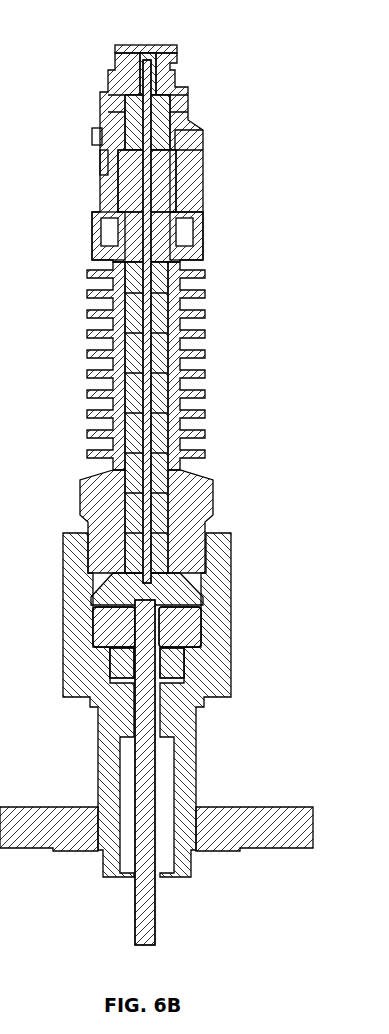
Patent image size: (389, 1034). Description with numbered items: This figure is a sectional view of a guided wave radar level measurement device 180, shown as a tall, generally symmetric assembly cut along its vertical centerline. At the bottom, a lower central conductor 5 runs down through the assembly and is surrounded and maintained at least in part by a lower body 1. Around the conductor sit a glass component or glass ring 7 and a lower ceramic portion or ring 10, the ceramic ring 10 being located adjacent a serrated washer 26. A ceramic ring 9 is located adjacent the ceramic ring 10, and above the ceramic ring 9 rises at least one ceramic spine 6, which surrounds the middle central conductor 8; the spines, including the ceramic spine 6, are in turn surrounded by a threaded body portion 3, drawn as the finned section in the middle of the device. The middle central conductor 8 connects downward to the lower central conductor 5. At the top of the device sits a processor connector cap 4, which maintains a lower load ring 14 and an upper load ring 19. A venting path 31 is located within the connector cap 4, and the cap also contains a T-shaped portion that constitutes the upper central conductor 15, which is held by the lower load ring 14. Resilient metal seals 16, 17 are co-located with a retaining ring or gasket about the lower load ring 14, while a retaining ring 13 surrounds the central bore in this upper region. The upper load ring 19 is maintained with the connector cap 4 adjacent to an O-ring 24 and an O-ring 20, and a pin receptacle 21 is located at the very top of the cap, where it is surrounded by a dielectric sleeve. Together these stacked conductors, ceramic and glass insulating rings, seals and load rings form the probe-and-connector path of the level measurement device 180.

The sensor assembly 180 is at (238, 44).
The pin receptacle 21 is at (150, 52).
The O-ring 20 is at (176, 105).
The O-ring 24 is at (128, 110).
The processor connector cap 4 is at (200, 170).
The upper load ring 19 is at (197, 137).
The upper central conductor 15 is at (94, 134).
The venting path 31 is at (103, 170).
The resilient metal seal 16 is at (116, 212).
The lower load ring 14 is at (195, 198).
The retaining ring 13 is at (203, 247).
The resilient metal seal 17 is at (106, 231).
The threaded body portion 3 is at (76, 268).
The middle central conductor 8 is at (198, 476).
The ceramic spine 6 is at (195, 548).
The serrated washer 26 is at (215, 575).
The lower body 1 is at (222, 618).
The ceramic ring 9 is at (112, 601).
The glass ring 7 is at (201, 640).
The lower ceramic ring 10 is at (185, 622).
The lower central conductor 5 is at (143, 793).